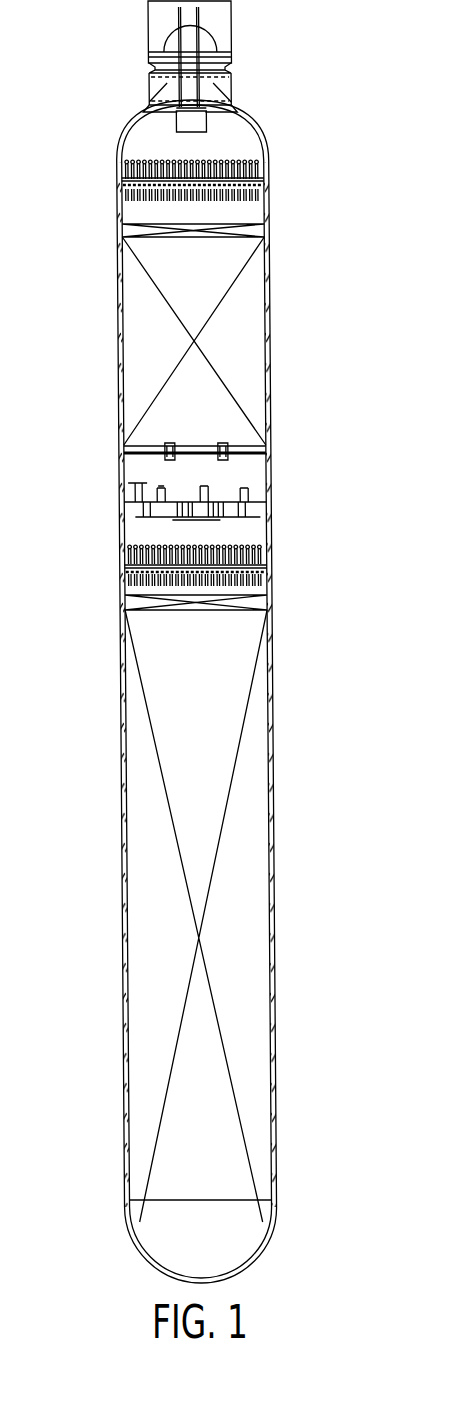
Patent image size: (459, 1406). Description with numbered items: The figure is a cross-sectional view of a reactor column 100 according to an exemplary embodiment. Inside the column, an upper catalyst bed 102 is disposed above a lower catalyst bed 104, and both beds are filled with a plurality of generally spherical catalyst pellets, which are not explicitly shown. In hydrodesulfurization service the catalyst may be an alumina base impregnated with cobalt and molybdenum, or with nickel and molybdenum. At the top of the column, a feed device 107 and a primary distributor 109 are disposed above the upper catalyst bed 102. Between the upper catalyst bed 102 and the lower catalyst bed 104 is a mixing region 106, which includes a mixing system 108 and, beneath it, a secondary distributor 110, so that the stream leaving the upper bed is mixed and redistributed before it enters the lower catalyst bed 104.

The reactor column 100 is at (311, 81).
The upper catalyst bed 102 is at (207, 289).
The lower catalyst bed 104 is at (214, 749).
The mixing region 106 is at (106, 454).
The feed device 107 is at (207, 127).
The mixing system 108 is at (263, 503).
The primary distributor 109 is at (253, 168).
The secondary distributor 110 is at (250, 548).